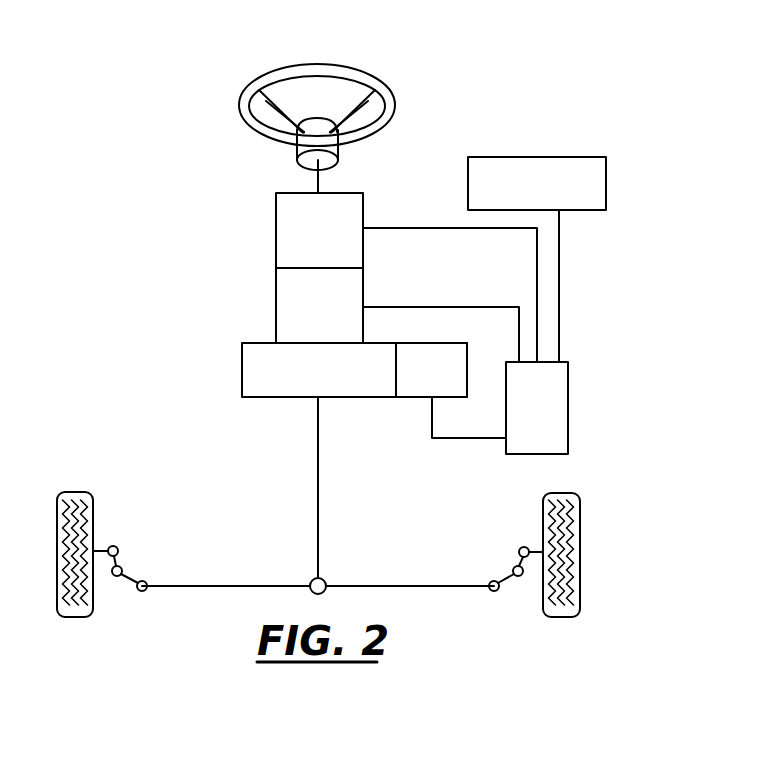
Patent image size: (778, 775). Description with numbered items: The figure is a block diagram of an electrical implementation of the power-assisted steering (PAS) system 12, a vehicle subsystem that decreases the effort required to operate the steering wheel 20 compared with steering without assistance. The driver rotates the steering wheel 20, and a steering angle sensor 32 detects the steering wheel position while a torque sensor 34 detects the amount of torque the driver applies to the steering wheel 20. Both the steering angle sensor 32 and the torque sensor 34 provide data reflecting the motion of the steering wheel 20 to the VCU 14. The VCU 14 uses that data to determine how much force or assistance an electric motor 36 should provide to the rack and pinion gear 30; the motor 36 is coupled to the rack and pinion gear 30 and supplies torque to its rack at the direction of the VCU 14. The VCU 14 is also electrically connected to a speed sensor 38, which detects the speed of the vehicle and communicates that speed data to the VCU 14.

The power-assisted steering (PAS) system 12 is at (576, 54).
The steering wheel 20 is at (381, 84).
The steering angle sensor 32 is at (276, 230).
The torque sensor 34 is at (276, 301).
The rack and pinion gear 30 is at (270, 398).
The electric motor 36 is at (447, 343).
The speed sensor 38 is at (606, 185).
The VCU 14 is at (568, 400).